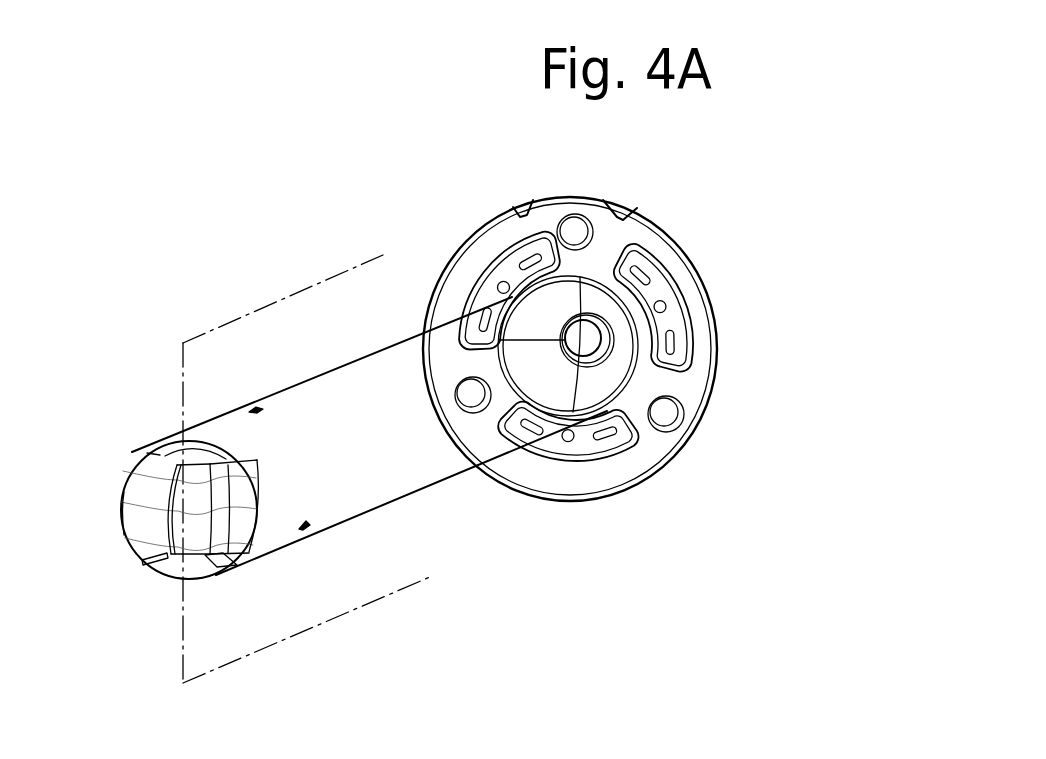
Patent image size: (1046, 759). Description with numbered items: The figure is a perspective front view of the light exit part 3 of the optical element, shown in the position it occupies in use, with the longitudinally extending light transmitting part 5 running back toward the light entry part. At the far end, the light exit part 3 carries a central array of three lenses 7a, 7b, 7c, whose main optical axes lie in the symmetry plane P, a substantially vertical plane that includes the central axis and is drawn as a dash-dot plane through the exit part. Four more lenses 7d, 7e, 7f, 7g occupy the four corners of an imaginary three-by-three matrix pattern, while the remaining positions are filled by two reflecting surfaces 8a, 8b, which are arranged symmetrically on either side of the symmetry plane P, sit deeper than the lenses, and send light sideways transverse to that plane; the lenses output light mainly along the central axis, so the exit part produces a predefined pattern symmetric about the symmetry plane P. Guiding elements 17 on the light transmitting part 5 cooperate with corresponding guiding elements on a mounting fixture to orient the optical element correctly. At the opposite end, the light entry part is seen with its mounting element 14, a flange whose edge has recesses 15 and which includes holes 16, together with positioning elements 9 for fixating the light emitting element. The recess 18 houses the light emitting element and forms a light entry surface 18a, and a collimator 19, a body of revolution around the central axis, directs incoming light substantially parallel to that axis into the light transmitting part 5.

The light exit part 3 is at (145, 412).
The light transmitting part 5 is at (373, 475).
The lens 7a is at (178, 449).
The lens 7b is at (172, 512).
The lens 7c is at (175, 568).
The lens 7d is at (152, 457).
The lens 7e is at (217, 458).
The lens 7f is at (155, 563).
The lens 7g is at (220, 572).
The reflecting surface 8a is at (140, 481).
The reflecting surface 8b is at (245, 523).
The positioning elements 9 is at (477, 298).
The mounting element 14 is at (630, 467).
The recess 15 is at (523, 215).
The hole 16 is at (572, 232).
The guiding element 17 is at (252, 410).
The recess 18 is at (603, 343).
The light entry surface 18a is at (597, 338).
The collimator 19 is at (614, 378).
The symmetry plane P is at (214, 333).